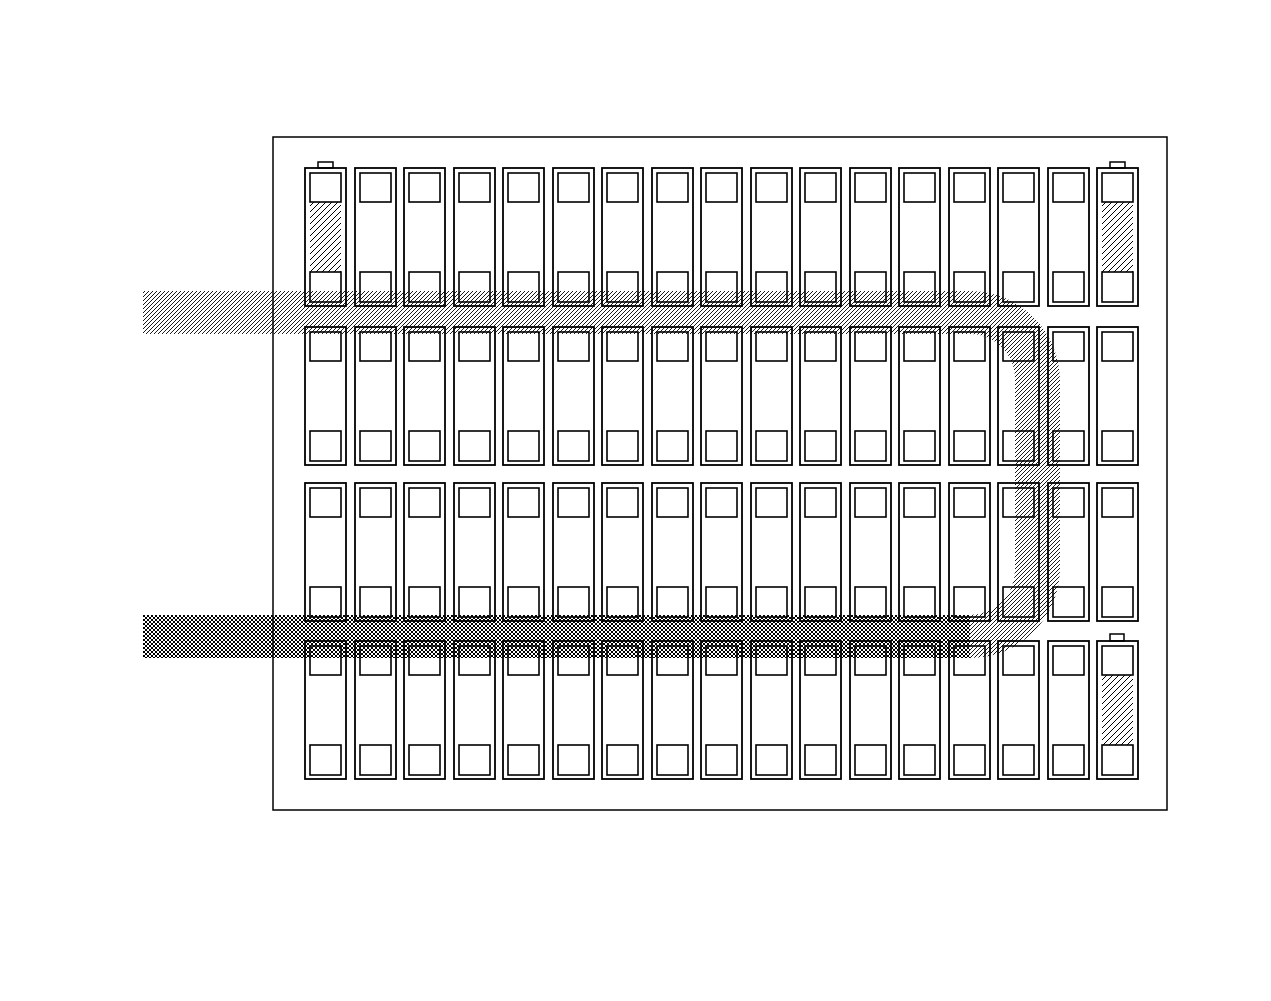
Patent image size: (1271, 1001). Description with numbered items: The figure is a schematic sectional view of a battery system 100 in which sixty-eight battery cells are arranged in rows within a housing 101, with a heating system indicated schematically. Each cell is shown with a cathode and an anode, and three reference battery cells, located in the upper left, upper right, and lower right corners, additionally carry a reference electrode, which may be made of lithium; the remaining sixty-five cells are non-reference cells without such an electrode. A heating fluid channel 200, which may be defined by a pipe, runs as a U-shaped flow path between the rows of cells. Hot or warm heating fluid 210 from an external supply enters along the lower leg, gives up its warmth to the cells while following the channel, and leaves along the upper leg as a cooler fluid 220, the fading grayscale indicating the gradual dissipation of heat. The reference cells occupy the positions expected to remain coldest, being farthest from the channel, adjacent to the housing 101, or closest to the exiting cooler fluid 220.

The battery system 100 is at (1124, 61).
The housing 101 is at (698, 137).
The heating fluid channel 200 is at (203, 593).
The heating fluid 210 is at (143, 640).
The cooler fluid 220 is at (143, 318).